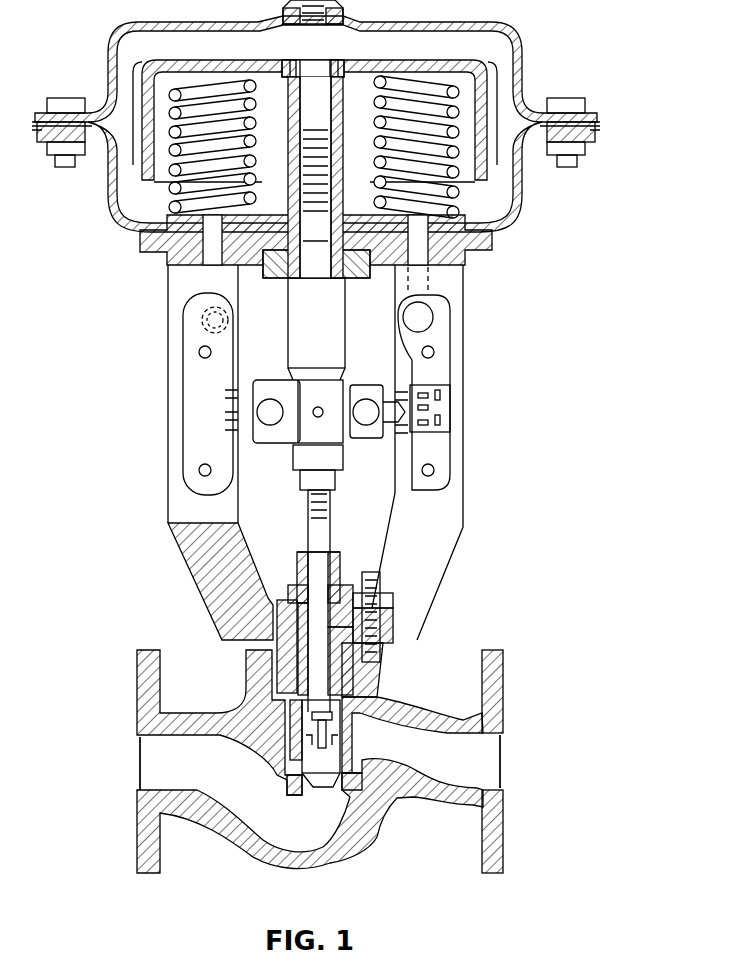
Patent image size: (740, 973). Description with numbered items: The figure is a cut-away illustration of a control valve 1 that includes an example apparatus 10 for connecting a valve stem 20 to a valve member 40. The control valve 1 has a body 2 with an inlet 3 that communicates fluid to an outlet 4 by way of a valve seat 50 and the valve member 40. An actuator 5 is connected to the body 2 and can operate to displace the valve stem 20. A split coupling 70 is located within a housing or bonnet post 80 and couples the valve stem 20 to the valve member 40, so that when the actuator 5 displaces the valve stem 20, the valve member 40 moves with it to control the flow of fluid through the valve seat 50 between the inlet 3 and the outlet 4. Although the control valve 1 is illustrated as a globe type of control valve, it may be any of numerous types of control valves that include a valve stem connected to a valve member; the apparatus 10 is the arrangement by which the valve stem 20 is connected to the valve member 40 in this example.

The control valve 1 is at (600, 32).
The body 2 is at (503, 673).
The inlet 3 is at (147, 763).
The outlet 4 is at (493, 768).
The actuator 5 is at (463, 415).
The apparatus 10 is at (222, 668).
The valve stem 20 is at (323, 545).
The valve member 40 is at (318, 797).
The valve seat 50 is at (355, 790).
The split coupling 70 is at (337, 748).
The bonnet post 80 is at (360, 722).